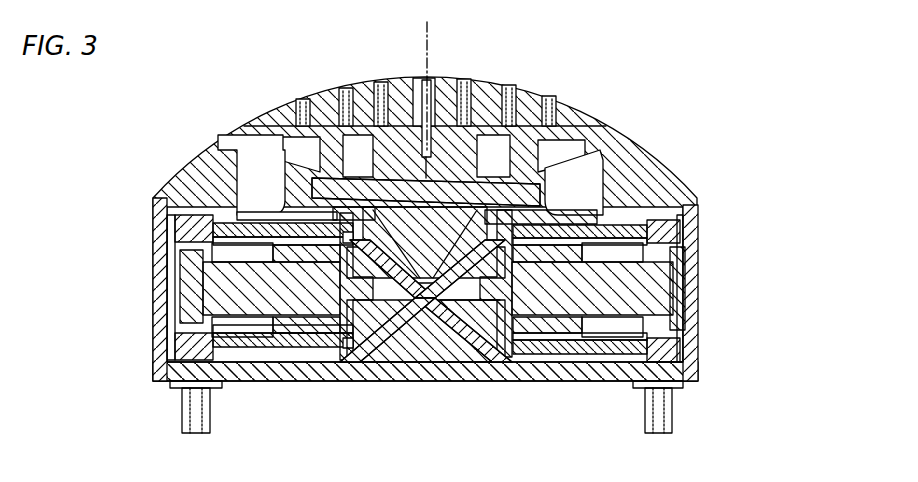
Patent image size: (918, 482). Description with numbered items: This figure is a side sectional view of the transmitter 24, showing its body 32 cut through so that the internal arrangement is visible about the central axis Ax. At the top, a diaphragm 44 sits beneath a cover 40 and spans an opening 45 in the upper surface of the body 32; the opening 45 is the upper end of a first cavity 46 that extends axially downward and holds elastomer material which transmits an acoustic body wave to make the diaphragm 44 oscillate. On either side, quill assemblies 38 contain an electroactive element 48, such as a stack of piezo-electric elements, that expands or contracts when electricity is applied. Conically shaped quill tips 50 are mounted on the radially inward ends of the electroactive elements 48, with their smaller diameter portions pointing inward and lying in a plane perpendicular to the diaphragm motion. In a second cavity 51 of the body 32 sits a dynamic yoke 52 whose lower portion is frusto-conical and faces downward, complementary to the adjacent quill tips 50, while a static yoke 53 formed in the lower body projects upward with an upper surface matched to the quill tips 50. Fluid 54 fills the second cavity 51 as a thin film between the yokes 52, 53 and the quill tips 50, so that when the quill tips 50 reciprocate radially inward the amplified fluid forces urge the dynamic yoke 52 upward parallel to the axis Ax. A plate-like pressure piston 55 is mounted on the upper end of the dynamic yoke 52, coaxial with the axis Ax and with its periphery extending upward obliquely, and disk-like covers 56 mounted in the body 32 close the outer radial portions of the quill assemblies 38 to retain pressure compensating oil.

The axis Ax is at (427, 28).
The transmitter 24 is at (122, 243).
The body 32 is at (657, 187).
The quill assemblies 38 is at (710, 228).
The cover 40 is at (449, 95).
The diaphragm 44 is at (317, 97).
The opening 45 is at (593, 150).
The first cavity 46 is at (583, 180).
The electroactive element 48 is at (203, 290).
The quill tips 50 is at (489, 332).
The second cavity 51 is at (463, 333).
The dynamic yoke 52 is at (393, 308).
The static yoke 53 is at (423, 310).
The fluid 54 is at (350, 352).
The pressure piston 55 is at (310, 187).
The covers 56 is at (697, 317).